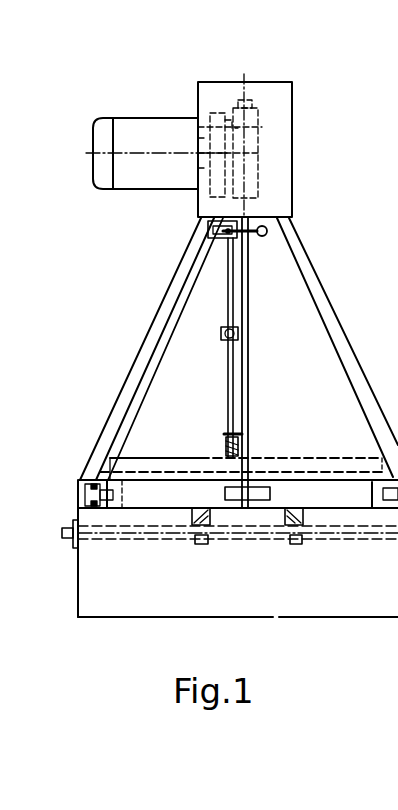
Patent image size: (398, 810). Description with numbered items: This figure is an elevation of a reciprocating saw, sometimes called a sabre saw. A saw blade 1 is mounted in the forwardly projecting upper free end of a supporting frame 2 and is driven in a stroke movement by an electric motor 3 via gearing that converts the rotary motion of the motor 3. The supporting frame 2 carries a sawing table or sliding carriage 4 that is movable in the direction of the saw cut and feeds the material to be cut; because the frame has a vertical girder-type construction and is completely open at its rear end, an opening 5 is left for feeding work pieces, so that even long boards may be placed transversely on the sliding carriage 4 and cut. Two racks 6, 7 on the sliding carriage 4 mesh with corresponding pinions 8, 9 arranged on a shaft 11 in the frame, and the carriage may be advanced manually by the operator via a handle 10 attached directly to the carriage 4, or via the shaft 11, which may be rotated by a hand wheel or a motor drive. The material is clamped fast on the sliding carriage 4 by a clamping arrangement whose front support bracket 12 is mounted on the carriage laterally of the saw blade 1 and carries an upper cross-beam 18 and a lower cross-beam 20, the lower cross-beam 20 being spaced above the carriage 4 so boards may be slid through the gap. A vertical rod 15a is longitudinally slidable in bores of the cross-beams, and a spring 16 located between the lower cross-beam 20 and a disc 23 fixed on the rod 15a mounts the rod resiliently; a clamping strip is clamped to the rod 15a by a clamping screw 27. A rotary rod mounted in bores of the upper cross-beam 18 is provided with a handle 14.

The saw blade 1 is at (248, 359).
The supporting frame 2 is at (273, 160).
The electric motor 3 is at (147, 137).
The sliding carriage 4 is at (317, 493).
The opening 5 is at (313, 395).
The rack 6 is at (203, 517).
The rack 7 is at (296, 518).
The pinion 8 is at (203, 539).
The pinion 9 is at (296, 541).
The handle 10 is at (262, 497).
The shaft 11 is at (375, 532).
The support bracket 12 is at (178, 317).
The handle 14 is at (270, 232).
The vertical rod 15a is at (232, 310).
The spring 16 is at (228, 443).
The upper cross-beam 18 is at (207, 230).
The lower cross-beam 20 is at (142, 465).
The disc 23 is at (235, 433).
The clamping screw 27 is at (222, 336).